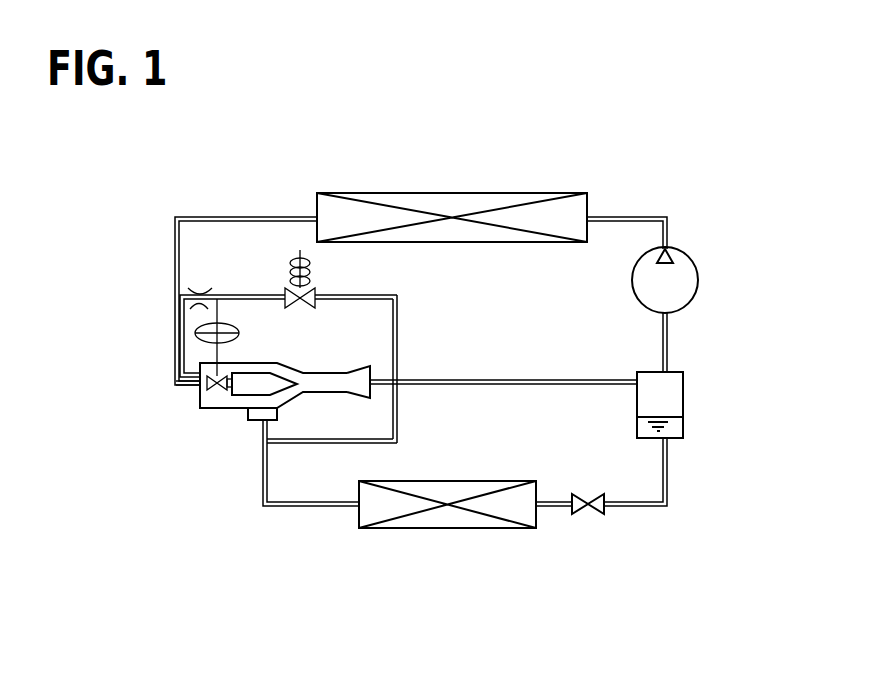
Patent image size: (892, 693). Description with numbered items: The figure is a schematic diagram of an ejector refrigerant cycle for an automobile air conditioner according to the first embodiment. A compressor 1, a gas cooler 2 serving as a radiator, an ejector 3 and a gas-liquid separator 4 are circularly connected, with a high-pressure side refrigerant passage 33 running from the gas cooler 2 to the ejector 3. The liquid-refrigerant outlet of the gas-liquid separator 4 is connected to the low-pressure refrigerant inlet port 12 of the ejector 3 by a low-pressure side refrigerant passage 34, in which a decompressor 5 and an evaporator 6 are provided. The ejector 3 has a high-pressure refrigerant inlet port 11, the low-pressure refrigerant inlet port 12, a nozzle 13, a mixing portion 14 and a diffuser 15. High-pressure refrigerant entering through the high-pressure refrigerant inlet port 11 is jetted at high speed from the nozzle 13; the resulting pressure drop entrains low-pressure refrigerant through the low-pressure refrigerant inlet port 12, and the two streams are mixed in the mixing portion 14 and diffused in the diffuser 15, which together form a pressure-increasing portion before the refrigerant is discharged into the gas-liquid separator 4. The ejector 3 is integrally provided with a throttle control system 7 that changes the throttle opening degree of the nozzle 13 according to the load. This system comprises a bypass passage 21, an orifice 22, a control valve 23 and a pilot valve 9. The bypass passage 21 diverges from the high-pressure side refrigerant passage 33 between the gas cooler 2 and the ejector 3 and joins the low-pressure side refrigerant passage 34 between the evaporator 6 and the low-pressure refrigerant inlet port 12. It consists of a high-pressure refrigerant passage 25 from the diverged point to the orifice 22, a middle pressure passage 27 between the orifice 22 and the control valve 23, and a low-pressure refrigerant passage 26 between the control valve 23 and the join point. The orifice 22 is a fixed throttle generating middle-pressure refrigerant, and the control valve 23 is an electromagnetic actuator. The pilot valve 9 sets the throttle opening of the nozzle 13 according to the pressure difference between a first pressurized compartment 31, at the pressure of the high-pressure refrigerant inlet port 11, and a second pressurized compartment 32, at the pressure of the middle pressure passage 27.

The compressor 1 is at (690, 283).
The gas cooler 2 is at (445, 192).
The ejector 3 is at (397, 400).
The gas-liquid separator 4 is at (678, 402).
The decompressor 5 is at (596, 514).
The evaporator 6 is at (450, 520).
The throttle control system 7 is at (176, 392).
The pilot valve 9 is at (222, 405).
The high-pressure refrigerant inlet port 11 is at (205, 394).
The low-pressure refrigerant inlet port 12 is at (258, 425).
The nozzle 13 is at (260, 378).
The mixing portion 14 is at (320, 393).
The diffuser 15 is at (356, 394).
The bypass passage 21 is at (398, 352).
The orifice 22 is at (203, 292).
The control valve 23 is at (296, 262).
The high-pressure refrigerant passage 25 is at (182, 297).
The low-pressure refrigerant passage 26 is at (310, 446).
The middle pressure passage 27 is at (246, 294).
The first pressurized compartment 31 is at (204, 341).
The second pressurized compartment 32 is at (198, 333).
The high-pressure side refrigerant passage 33 is at (176, 222).
The low-pressure side refrigerant passage 34 is at (300, 510).